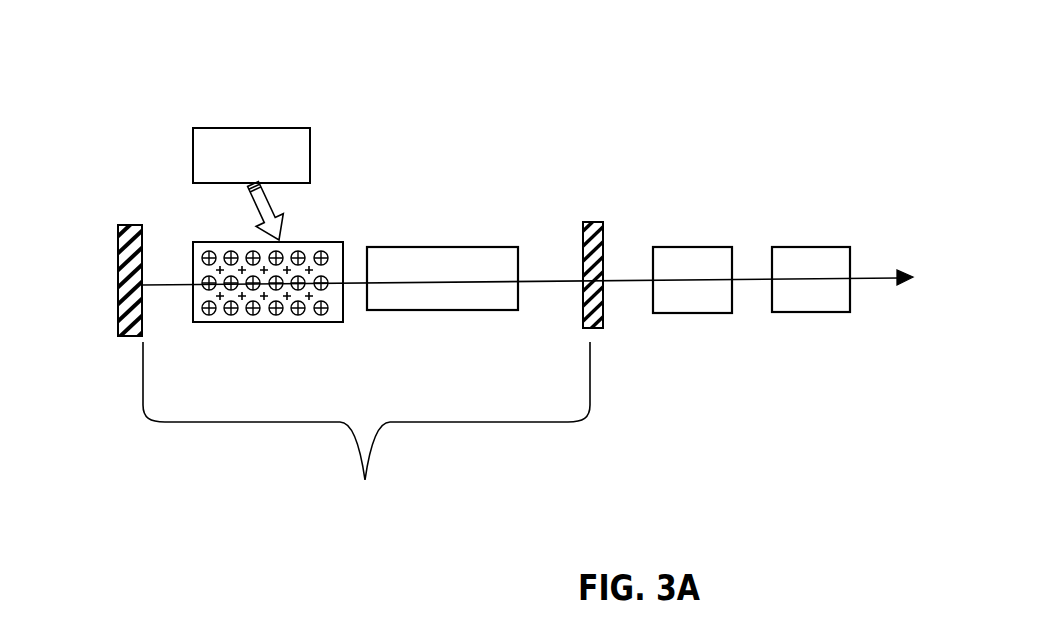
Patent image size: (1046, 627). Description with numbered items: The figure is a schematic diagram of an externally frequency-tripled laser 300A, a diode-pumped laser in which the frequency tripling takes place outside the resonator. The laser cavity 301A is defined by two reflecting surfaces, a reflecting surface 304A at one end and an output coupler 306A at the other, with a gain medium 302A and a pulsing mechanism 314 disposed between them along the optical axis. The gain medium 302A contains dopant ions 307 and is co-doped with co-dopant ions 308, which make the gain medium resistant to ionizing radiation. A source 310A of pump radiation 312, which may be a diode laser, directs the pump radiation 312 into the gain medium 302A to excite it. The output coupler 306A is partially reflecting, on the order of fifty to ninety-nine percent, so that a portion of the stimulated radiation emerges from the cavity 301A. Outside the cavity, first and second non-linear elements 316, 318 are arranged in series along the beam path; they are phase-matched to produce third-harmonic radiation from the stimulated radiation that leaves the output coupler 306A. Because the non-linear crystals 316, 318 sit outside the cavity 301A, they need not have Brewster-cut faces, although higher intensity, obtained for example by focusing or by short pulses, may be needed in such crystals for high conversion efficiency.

The externally frequency-tripled laser 300A is at (687, 38).
The cavity 301A is at (365, 480).
The gain medium 302A is at (290, 327).
The reflecting surface 304A is at (142, 248).
The output coupler 306A is at (586, 248).
The dopant ions 307 is at (325, 311).
The co-dopant ions 308 is at (263, 300).
The source of pump radiation 310A is at (284, 128).
The pump radiation 312 is at (283, 215).
The pulsing mechanism 314 is at (426, 247).
The first non-linear element 316 is at (684, 307).
The second non-linear element 318 is at (805, 306).